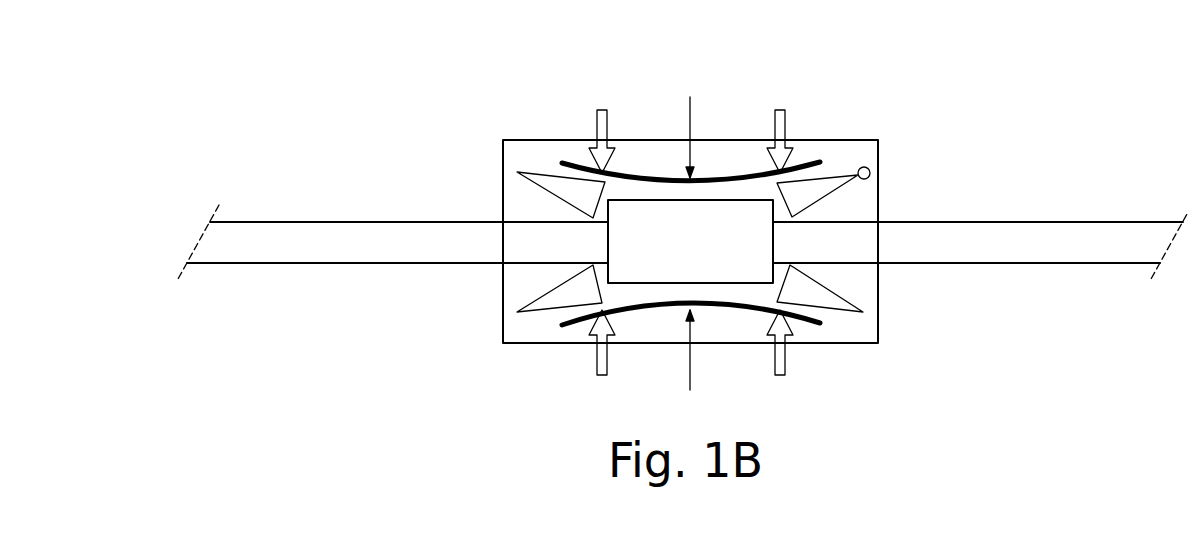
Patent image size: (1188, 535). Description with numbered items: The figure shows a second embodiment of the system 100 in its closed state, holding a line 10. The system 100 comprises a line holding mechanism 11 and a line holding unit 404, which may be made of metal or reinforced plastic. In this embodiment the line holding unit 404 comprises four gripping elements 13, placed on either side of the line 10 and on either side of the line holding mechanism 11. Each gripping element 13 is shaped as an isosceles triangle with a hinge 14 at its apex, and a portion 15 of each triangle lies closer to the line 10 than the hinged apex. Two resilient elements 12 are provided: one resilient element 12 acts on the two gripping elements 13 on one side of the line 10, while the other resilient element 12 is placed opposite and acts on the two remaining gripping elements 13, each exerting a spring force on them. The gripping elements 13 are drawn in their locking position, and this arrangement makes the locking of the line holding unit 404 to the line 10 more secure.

The system 100 is at (1080, 140).
The line 10 is at (357, 222).
The line holding unit 404 is at (523, 152).
The line holding mechanism 11 is at (705, 257).
The resilient element 12 is at (587, 172).
The gripping element 13 is at (542, 185).
The hinge 14 is at (866, 167).
The portion 15 is at (582, 288).